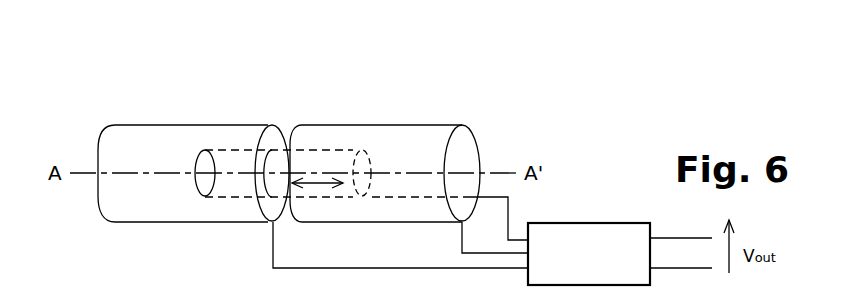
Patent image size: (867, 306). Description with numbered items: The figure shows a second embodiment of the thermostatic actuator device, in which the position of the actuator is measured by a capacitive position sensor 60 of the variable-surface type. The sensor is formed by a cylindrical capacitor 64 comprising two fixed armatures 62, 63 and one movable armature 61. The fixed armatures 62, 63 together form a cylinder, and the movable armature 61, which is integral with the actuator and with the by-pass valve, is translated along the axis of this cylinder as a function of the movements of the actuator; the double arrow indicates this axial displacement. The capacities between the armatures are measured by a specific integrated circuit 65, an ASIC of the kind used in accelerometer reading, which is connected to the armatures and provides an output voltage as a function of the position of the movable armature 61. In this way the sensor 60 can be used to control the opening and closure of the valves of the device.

The position sensor 60 is at (435, 100).
The movable armature 61 is at (230, 190).
The fixed armature 62 is at (370, 138).
The fixed armature 63 is at (170, 148).
The cylindrical capacitor 64 is at (318, 123).
The specific integrated circuit 65 is at (608, 233).